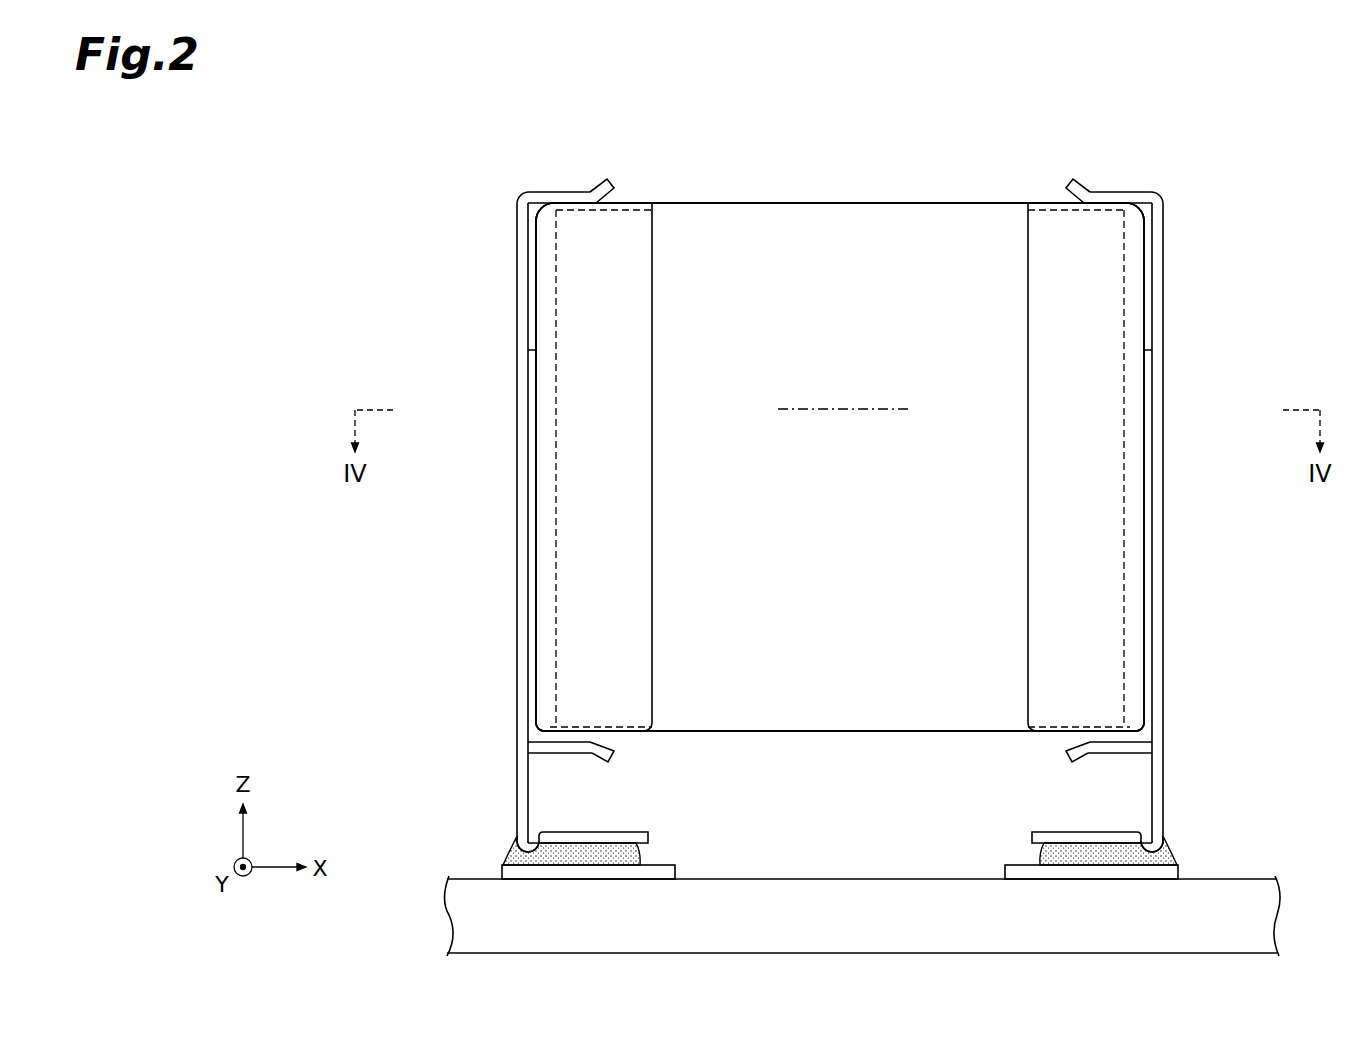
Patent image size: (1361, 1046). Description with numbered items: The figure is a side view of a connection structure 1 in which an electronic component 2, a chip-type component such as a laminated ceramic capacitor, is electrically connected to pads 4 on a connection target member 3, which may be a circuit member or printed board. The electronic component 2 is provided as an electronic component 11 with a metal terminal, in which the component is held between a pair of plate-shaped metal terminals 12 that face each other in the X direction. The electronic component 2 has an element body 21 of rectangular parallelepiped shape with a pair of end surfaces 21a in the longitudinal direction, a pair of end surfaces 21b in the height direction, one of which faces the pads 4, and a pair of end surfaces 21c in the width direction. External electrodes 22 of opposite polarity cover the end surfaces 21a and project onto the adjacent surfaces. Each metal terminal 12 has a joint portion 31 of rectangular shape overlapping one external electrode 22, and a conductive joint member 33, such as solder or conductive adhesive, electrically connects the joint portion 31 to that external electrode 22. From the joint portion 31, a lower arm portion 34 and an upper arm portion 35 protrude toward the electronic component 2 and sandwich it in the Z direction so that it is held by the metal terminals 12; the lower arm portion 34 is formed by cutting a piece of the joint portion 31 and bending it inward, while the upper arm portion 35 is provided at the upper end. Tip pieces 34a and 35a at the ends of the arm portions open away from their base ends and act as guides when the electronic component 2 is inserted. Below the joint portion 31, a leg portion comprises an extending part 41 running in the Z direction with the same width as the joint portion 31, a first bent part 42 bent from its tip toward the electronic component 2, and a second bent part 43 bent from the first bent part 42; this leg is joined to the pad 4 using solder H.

The connection structure 1 is at (455, 180).
The electronic component 2 is at (650, 185).
The connection target member 3 is at (480, 897).
The pad 4 is at (660, 870).
The electronic component with a metal terminal 11 is at (1196, 185).
The metal terminal 12 is at (472, 389).
The element body 21 is at (739, 185).
The end surface in longitudinal direction 21a is at (556, 452).
The end surface in height direction 21b is at (902, 202).
The end surface in width direction 21c is at (960, 441).
The external electrode 22 is at (565, 311).
The joint portion 31 is at (517, 514).
The joint member 33 is at (530, 548).
The lower arm portion 34 is at (560, 750).
The tip piece of lower arm portion 34a is at (600, 760).
The upper arm portion 35 is at (545, 193).
The tip piece of upper arm portion 35a is at (600, 186).
The extending part 41 is at (844, 798).
The first bent part 42 is at (540, 846).
The second bent part 43 is at (622, 834).
The solder H is at (510, 846).